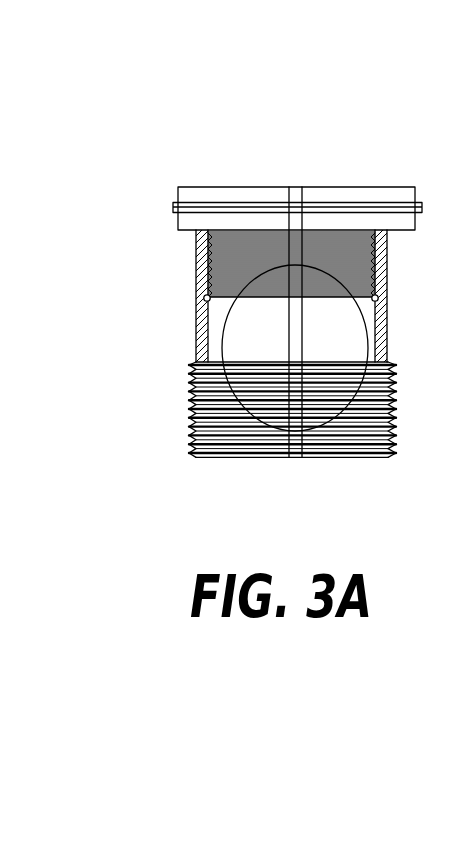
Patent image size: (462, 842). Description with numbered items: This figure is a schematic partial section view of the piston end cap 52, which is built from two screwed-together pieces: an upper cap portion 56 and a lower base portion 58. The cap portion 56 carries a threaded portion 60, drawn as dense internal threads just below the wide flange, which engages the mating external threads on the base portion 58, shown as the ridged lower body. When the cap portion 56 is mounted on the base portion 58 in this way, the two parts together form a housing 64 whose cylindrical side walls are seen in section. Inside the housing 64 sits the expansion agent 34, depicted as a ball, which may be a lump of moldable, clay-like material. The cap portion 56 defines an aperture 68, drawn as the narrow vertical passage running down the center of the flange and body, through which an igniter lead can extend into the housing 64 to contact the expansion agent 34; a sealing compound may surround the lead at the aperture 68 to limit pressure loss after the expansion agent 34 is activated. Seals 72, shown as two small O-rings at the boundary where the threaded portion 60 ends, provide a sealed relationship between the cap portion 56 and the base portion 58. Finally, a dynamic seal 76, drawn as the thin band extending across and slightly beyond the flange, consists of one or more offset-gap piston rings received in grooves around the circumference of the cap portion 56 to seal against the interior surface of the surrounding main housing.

The piston end cap 52 is at (371, 136).
The cap portion 56 is at (400, 193).
The dynamic seal 76 is at (173, 206).
The aperture 68 is at (295, 193).
The housing 64 is at (370, 317).
The threaded portion 60 is at (203, 257).
The expansion agent 34 is at (352, 344).
The seals 72 is at (204, 298).
The base portion 58 is at (393, 415).